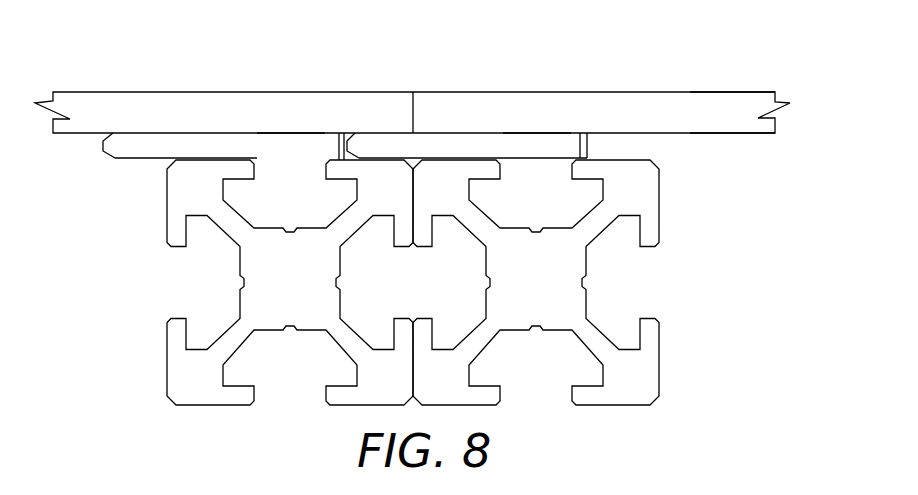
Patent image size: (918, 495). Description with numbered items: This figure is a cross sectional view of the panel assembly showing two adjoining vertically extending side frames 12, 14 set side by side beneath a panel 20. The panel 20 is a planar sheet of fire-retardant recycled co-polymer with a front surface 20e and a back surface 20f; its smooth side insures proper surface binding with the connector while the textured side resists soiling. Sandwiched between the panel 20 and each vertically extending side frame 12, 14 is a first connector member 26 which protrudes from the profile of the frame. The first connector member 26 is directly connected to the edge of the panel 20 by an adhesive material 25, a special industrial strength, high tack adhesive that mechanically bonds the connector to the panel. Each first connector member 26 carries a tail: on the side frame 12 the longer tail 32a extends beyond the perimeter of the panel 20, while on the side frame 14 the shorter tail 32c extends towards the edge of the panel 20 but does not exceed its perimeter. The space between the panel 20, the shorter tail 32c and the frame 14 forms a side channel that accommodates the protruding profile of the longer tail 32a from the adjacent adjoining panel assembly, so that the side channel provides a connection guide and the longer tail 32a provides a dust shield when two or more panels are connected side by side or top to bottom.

The vertically extending side frame 12 is at (198, 375).
The vertically extending side frame 14 is at (638, 370).
The panel 20 is at (255, 103).
The front surface 20e is at (718, 92).
The back surface 20f is at (730, 133).
The adhesive material 25 is at (295, 133).
The first connector member 26 is at (198, 142).
The longer tail 32a is at (150, 142).
The shorter tail 32c is at (335, 140).